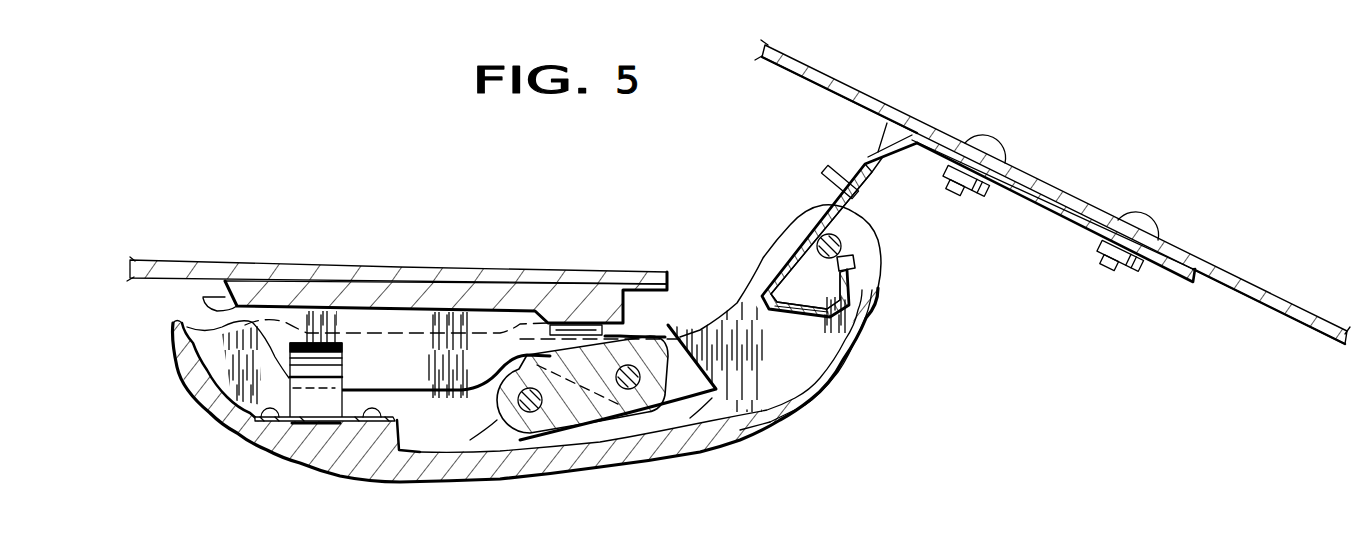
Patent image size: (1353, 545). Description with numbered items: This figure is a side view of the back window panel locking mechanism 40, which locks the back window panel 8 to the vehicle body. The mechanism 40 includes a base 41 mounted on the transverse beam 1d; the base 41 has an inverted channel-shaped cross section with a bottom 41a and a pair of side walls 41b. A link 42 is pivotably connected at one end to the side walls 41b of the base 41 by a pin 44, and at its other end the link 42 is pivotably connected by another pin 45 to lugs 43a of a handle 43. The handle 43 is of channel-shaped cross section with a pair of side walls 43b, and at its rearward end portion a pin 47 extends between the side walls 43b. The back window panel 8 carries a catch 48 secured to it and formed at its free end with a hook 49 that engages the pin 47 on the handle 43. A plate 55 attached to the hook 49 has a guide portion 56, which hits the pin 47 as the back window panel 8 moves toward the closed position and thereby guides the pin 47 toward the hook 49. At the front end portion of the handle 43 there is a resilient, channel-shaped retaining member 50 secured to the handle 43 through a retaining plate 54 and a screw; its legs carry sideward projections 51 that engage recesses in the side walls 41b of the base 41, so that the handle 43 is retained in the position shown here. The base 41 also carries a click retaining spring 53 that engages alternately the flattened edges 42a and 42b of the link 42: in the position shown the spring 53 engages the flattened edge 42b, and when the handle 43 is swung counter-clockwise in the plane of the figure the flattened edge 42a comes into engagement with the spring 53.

The transverse beam 1d is at (347, 268).
The back window panel 8 is at (1057, 190).
The back window panel locking mechanism 40 is at (822, 428).
The base 41 is at (521, 296).
The bottom 41a is at (273, 286).
The side walls 41b is at (417, 392).
The link 42 is at (594, 410).
The flattened edge 42a is at (700, 440).
The flattened edge 42b is at (640, 333).
The handle 43 is at (363, 460).
The lugs 43a is at (470, 440).
The side walls 43b is at (733, 312).
The pin 44 is at (633, 390).
The pin 45 is at (527, 413).
The pin 47 is at (843, 244).
The catch 48 is at (1033, 200).
The hook 49 is at (848, 264).
The retaining member 50 is at (317, 407).
The sideward projections 51 is at (288, 377).
The click retaining spring 53 is at (590, 322).
The retaining plate 54 is at (268, 412).
The plate 55 is at (793, 240).
The guide portion 56 is at (780, 313).